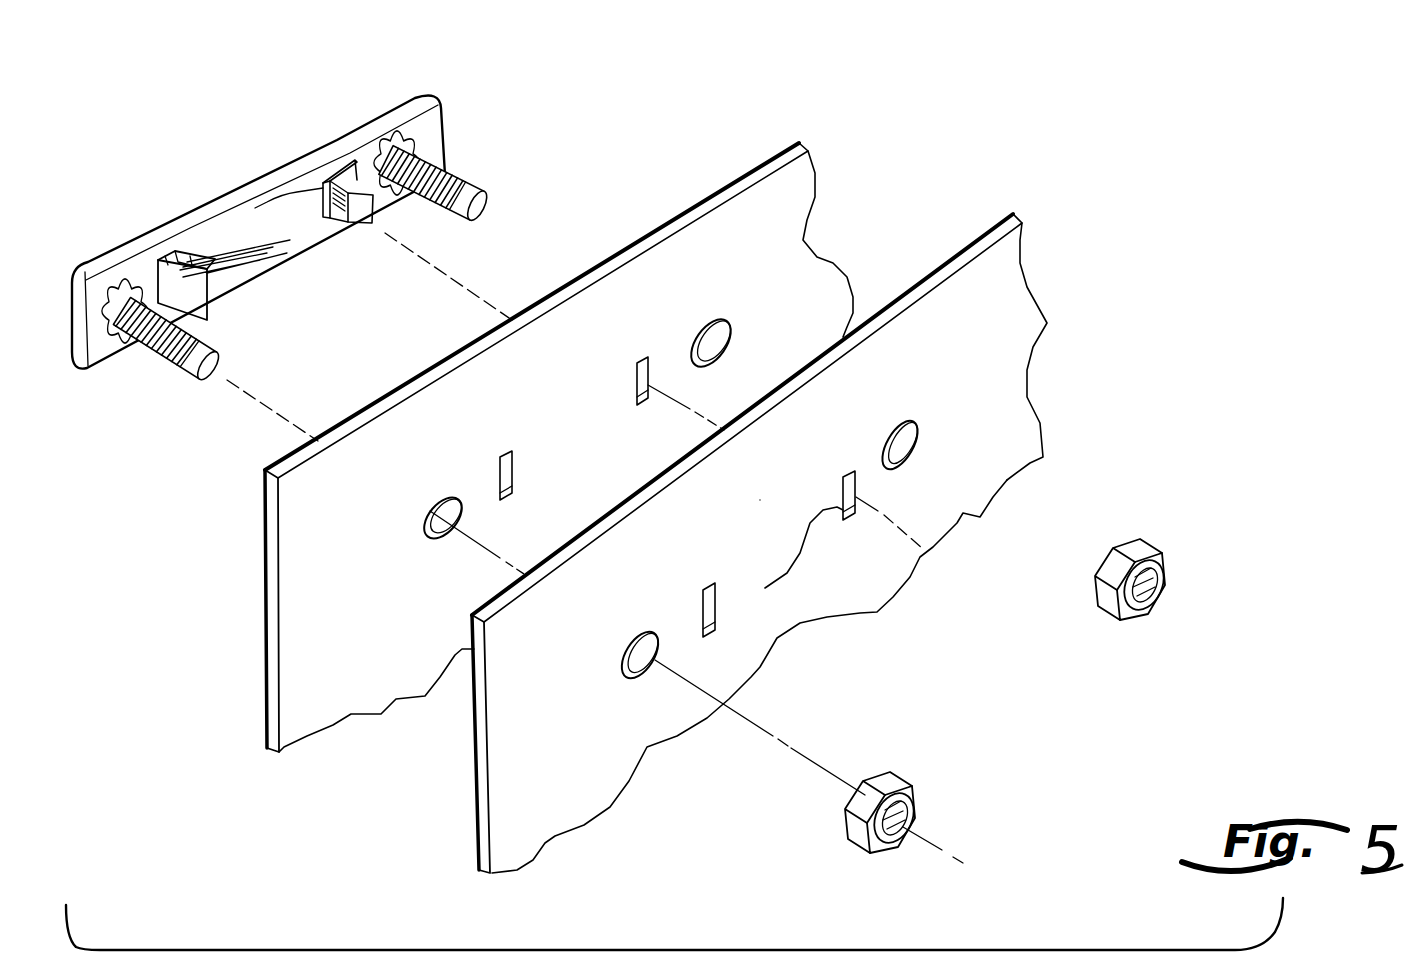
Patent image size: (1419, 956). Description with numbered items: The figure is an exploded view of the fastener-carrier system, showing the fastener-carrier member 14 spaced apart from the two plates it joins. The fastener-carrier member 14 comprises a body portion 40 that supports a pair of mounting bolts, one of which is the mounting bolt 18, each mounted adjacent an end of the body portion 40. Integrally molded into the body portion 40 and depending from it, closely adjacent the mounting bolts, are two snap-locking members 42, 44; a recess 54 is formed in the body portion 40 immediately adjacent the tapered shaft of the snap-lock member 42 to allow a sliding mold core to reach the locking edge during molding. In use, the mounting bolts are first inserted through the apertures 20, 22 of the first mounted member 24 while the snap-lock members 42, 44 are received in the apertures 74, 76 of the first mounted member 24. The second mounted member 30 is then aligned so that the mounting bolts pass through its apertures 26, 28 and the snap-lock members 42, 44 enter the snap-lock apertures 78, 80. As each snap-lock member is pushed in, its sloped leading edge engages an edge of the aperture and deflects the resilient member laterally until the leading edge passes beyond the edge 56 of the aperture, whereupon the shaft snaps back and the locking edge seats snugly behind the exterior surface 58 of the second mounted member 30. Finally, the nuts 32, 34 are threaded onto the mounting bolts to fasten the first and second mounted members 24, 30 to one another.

The fastener-carrier member 14 is at (122, 123).
The mounting bolt 18 is at (458, 167).
The aperture of the first mounted member 20 is at (446, 498).
The aperture of the first mounted member 22 is at (709, 322).
The first mounted member 24 is at (743, 170).
The aperture of the second mounted member 26 is at (633, 633).
The aperture of the second mounted member 28 is at (908, 426).
The second mounted member 30 is at (936, 268).
The nut 32 is at (893, 773).
The nut 34 is at (1152, 543).
The body portion 40 is at (222, 214).
The snap-locking member 42 is at (253, 280).
The snap-locking member 44 is at (357, 228).
The recess 54 is at (188, 262).
The edge of the aperture 56 is at (715, 604).
The exterior surface 58 is at (803, 486).
The aperture of the first mounted member 74 is at (501, 452).
The aperture of the first mounted member 76 is at (643, 358).
The snap-lock aperture 78 is at (711, 582).
The snap-lock aperture 80 is at (848, 471).